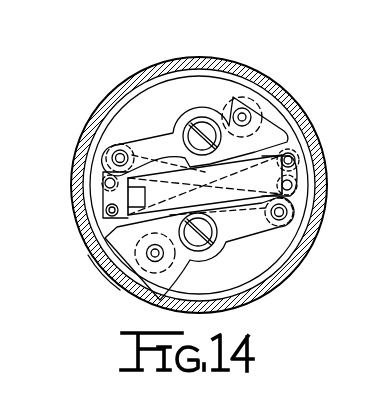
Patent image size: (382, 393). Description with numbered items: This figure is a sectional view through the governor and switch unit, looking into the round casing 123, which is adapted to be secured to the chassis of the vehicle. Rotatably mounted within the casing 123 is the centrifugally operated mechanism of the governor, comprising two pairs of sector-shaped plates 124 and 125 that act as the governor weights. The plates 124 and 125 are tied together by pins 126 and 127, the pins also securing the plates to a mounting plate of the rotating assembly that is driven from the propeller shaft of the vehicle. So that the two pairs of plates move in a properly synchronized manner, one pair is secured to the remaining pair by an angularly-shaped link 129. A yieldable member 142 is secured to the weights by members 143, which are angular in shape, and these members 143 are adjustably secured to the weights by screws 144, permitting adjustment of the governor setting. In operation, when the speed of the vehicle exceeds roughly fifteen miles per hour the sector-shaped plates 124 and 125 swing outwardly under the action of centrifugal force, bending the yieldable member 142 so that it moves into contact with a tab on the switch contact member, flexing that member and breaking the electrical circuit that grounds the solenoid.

The casing 123 is at (273, 84).
The sector-shaped plate 124 is at (150, 118).
The sector-shaped plate 125 is at (258, 256).
The pin 126 is at (103, 190).
The pin 127 is at (290, 185).
The angularly-shaped link 129 is at (300, 146).
The yieldable member 142 is at (106, 266).
The member 143 is at (173, 140).
The screw 144 is at (203, 133).